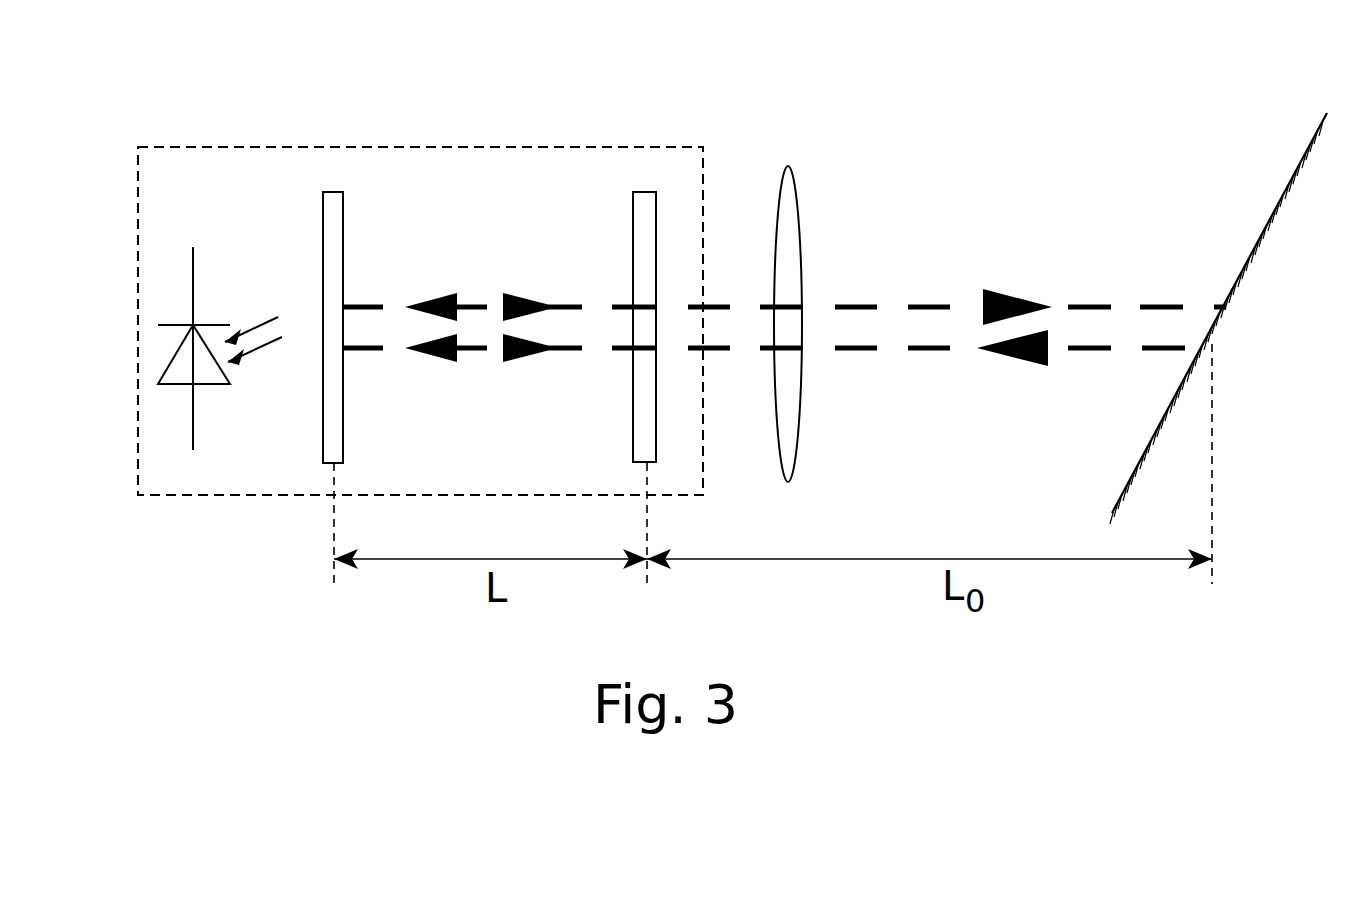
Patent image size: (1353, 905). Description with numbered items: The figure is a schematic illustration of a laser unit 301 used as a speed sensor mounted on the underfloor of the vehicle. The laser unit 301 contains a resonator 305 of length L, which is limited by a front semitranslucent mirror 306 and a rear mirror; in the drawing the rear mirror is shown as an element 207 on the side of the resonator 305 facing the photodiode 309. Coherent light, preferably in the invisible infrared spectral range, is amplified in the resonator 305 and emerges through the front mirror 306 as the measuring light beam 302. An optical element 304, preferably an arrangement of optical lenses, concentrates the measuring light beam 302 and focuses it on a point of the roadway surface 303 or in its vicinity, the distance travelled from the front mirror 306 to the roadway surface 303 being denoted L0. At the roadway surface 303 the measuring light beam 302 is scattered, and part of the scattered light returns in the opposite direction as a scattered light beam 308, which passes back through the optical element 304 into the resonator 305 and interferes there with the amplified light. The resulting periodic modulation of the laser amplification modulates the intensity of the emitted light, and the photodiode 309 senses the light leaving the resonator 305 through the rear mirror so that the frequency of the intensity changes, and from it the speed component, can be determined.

The laser unit 301 is at (192, 147).
The first optical element 207 is at (332, 192).
The resonator 305 is at (483, 242).
The front semitranslucent mirror 306 is at (647, 192).
The optical element 304 is at (793, 200).
The roadway surface 303 is at (1272, 215).
The measuring light beam 302 is at (910, 303).
The scattered light beam 308 is at (895, 347).
The photodiode 309 is at (204, 387).